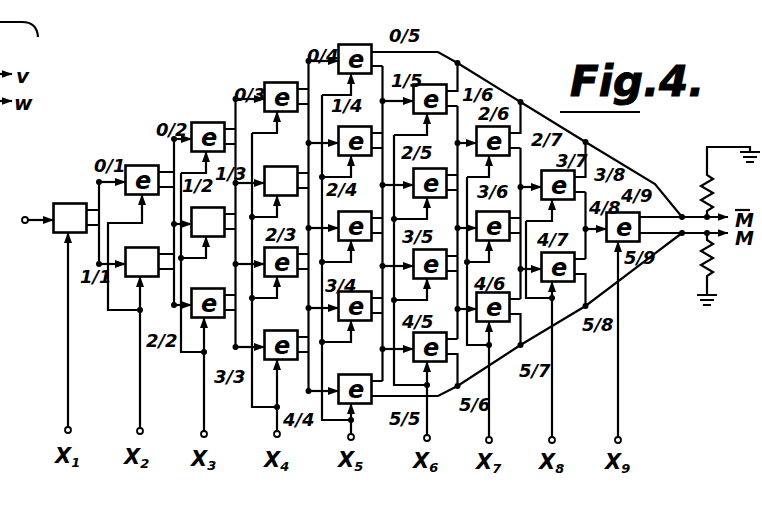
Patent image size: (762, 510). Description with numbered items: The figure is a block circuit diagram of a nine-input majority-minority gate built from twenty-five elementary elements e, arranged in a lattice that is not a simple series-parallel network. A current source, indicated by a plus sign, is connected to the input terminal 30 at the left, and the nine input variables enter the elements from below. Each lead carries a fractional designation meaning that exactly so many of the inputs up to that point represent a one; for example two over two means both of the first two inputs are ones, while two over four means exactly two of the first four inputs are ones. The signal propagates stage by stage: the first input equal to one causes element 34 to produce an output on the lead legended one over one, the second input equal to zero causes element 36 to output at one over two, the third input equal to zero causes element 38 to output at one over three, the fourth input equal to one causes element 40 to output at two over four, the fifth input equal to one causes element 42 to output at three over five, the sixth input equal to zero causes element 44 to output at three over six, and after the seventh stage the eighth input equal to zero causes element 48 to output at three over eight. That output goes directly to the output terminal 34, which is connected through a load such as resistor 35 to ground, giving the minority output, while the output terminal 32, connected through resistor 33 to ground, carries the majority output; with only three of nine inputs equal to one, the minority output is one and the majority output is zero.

The input terminal 30 is at (27, 214).
The output terminal 32 is at (683, 240).
The resistor 33 is at (716, 262).
The output terminal 34 is at (70, 203).
The resistor 35 is at (716, 184).
The elementary element 36 is at (137, 278).
The elementary element 38 is at (216, 238).
The elementary element 40 is at (278, 166).
The elementary element 42 is at (380, 268).
The elementary element 44 is at (425, 283).
The elementary element 48 is at (543, 193).